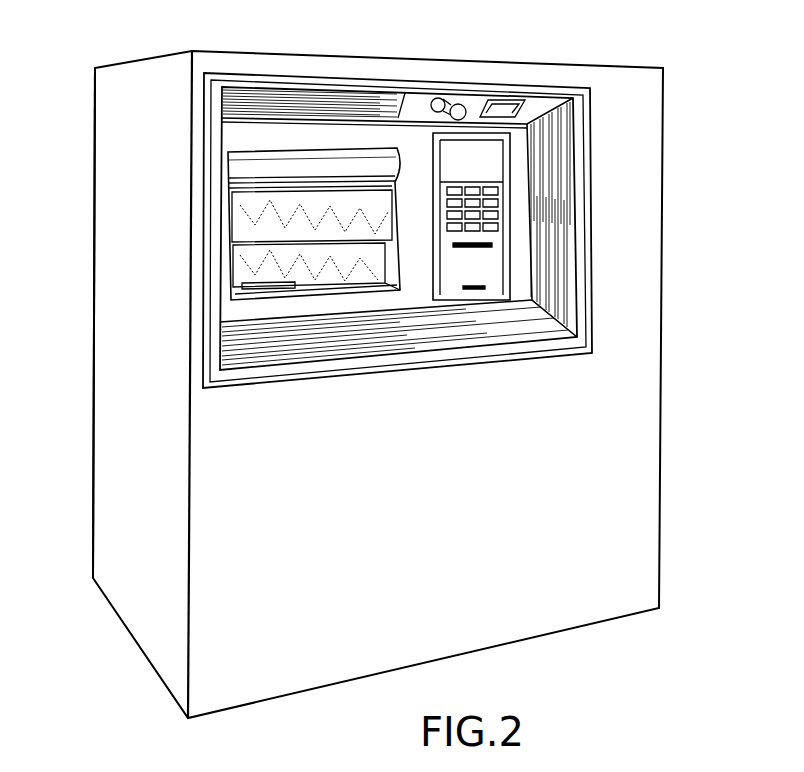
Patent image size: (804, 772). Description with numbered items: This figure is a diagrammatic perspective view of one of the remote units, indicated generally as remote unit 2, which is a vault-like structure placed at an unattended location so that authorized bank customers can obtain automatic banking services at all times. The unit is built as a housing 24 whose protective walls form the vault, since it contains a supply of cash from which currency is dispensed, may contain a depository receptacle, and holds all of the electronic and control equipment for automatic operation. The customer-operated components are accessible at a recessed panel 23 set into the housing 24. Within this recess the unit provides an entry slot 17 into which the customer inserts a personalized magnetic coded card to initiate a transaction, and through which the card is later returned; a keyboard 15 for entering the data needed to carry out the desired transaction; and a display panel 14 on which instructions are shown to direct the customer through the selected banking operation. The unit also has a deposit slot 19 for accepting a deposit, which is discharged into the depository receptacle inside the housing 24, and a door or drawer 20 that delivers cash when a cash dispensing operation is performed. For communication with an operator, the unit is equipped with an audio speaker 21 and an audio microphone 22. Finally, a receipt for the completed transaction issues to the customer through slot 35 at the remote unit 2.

The remote unit 2 is at (666, 280).
The display panel 14 is at (492, 152).
The keyboard 15 is at (495, 203).
The entry slot 17 is at (482, 289).
The deposit slot 19 is at (272, 288).
The door or drawer 20 is at (300, 163).
The audio speaker 21 is at (507, 107).
The audio microphone 22 is at (455, 104).
The recessed panel 23 is at (358, 303).
The housing 24 is at (150, 280).
The slot 35 is at (472, 247).